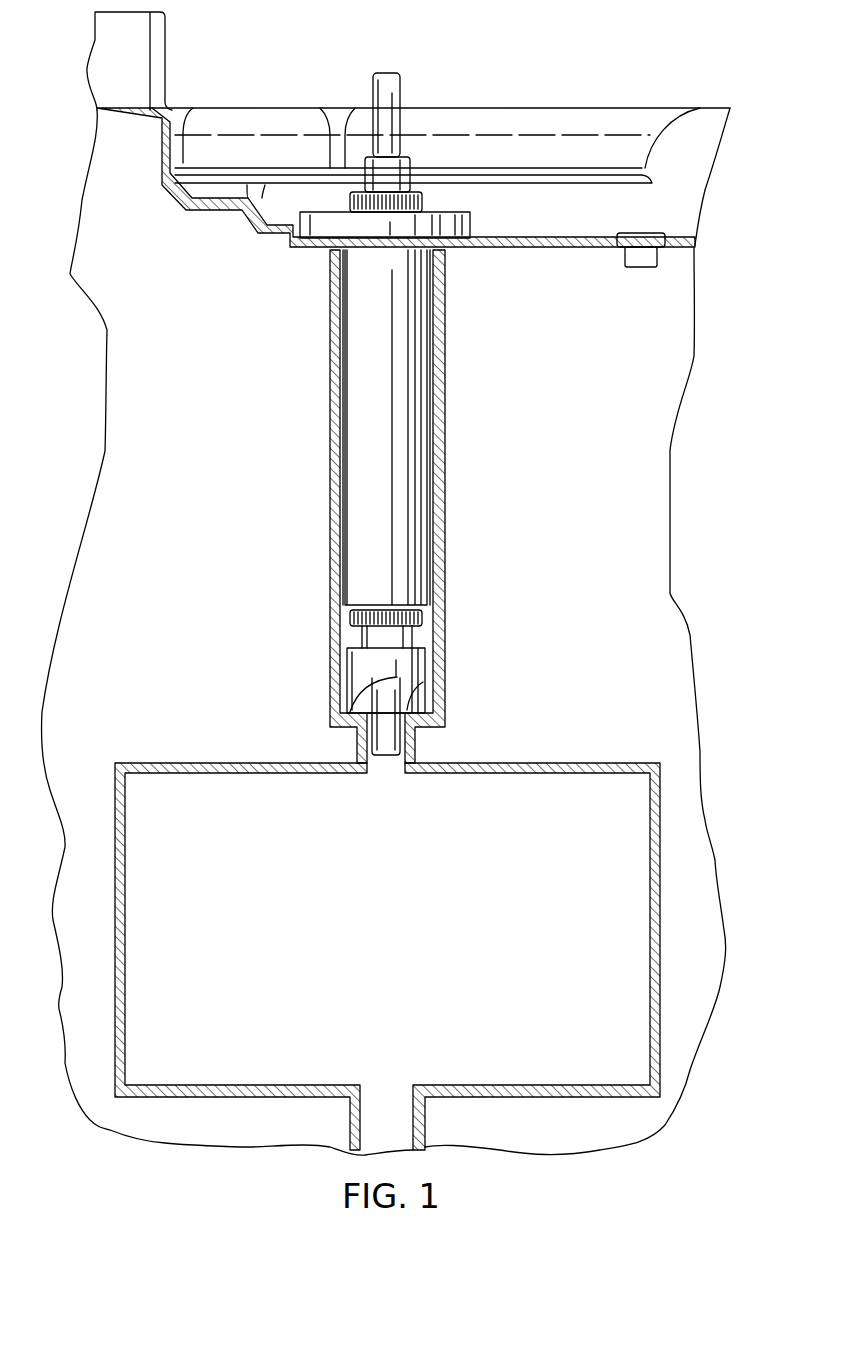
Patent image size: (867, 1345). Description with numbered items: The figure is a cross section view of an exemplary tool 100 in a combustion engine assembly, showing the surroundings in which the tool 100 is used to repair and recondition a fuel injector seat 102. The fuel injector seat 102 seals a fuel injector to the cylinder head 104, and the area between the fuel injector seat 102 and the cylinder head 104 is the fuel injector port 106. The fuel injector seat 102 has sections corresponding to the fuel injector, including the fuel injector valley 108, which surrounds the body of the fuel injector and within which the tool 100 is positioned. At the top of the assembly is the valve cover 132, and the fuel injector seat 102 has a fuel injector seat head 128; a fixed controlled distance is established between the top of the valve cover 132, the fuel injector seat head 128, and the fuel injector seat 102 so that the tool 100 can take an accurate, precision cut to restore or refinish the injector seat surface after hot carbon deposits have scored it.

The tool 100 is at (422, 84).
The fuel injector seat 102 is at (440, 728).
The cylinder head 104 is at (388, 783).
The fuel injector port 106 is at (356, 745).
The fuel injector valley 108 is at (446, 358).
The fuel injector seat head 128 is at (329, 250).
The valve cover 132 is at (638, 215).